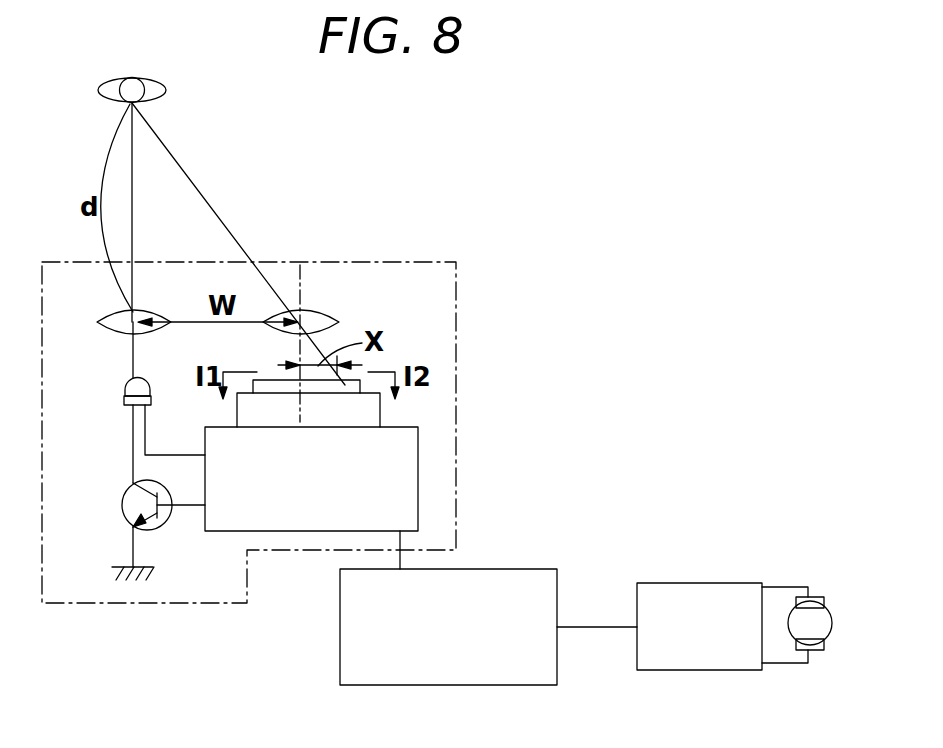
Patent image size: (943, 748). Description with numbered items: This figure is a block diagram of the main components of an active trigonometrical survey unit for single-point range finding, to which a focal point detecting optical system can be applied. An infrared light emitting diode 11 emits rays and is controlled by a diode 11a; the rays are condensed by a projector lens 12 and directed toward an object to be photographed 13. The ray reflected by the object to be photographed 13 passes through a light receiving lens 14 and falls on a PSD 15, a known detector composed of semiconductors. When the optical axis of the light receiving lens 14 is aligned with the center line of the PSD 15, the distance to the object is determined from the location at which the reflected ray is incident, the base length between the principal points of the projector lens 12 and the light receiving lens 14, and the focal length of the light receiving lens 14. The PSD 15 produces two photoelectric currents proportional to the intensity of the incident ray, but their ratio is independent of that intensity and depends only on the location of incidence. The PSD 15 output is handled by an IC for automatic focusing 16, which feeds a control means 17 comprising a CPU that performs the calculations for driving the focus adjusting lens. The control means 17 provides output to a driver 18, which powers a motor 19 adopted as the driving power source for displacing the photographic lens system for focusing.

The infrared light emitting diode 11 is at (124, 394).
The diode for controlling the infrared light emitting diode 11a is at (123, 510).
The projector lens 12 is at (112, 332).
The object to be photographed 13 is at (166, 90).
The light receiving lens 14 is at (332, 312).
The PSD 15 is at (273, 378).
The IC for automatic focusing 16 is at (233, 532).
The control means 17 is at (527, 568).
The driver 18 is at (711, 582).
The motor 19 is at (831, 604).